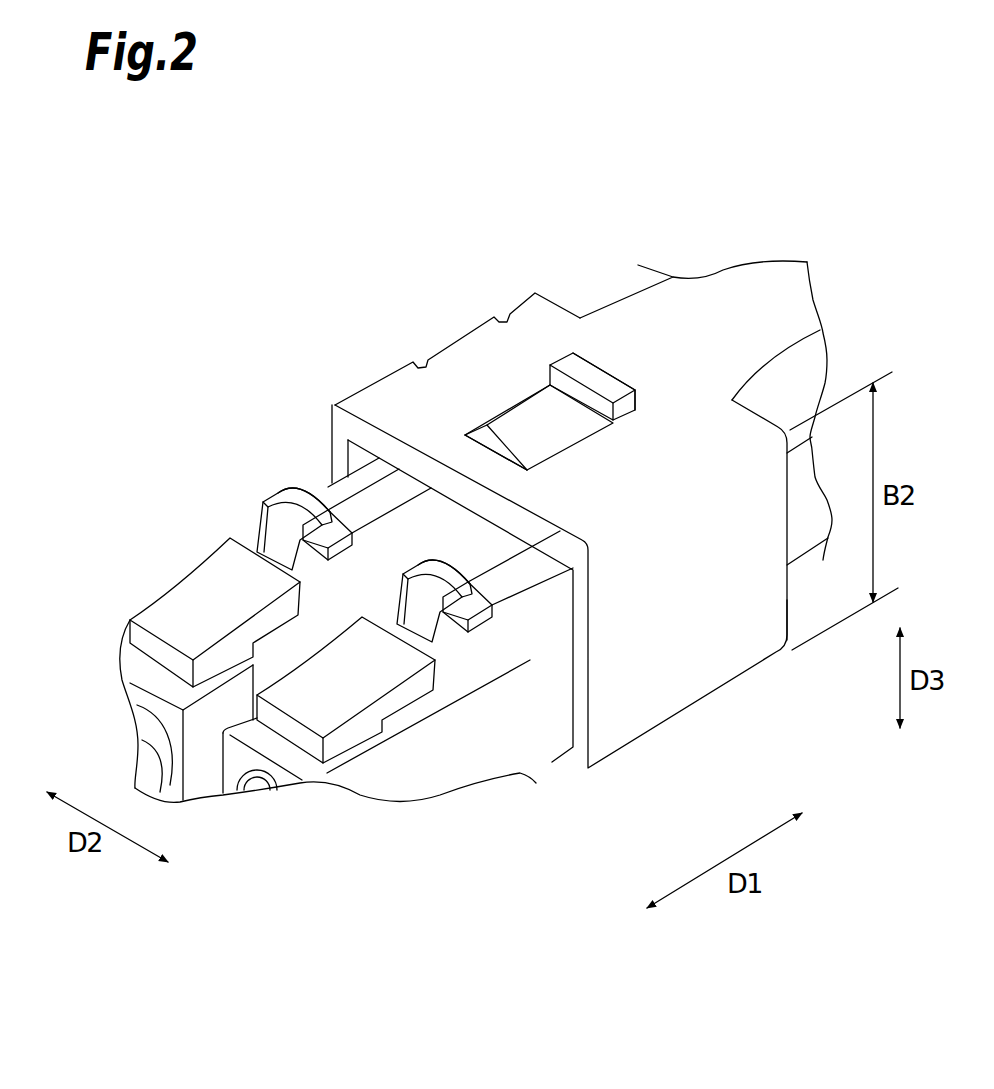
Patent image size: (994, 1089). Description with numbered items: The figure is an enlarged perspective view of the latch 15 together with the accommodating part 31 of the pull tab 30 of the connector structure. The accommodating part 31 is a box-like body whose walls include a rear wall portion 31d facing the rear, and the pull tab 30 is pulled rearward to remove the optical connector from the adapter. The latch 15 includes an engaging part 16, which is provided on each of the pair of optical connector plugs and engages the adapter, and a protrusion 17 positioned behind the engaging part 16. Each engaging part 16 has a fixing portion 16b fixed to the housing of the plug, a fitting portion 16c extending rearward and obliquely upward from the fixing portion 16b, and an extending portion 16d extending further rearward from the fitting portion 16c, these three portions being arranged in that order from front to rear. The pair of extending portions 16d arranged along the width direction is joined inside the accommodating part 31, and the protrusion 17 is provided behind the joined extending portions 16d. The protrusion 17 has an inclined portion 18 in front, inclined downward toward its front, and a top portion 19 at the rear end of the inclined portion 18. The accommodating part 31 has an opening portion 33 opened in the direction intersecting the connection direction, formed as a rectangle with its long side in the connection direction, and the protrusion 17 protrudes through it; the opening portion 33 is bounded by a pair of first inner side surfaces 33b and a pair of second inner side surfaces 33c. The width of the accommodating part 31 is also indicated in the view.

The latch 15 is at (265, 457).
The engaging part 16 is at (262, 498).
The fixing portion 16b is at (175, 612).
The fitting portion 16c is at (278, 497).
The extending portion 16d is at (358, 483).
The protrusion 17 is at (575, 352).
The inclined portion 18 is at (500, 385).
The top portion 19 is at (600, 382).
The pull tab 30 is at (805, 258).
The accommodating part 31 is at (528, 252).
The rear wall portion 31d is at (788, 605).
The opening portion 33 is at (480, 417).
The first inner side surfaces 33b is at (478, 418).
The second inner side surfaces 33c is at (502, 452).